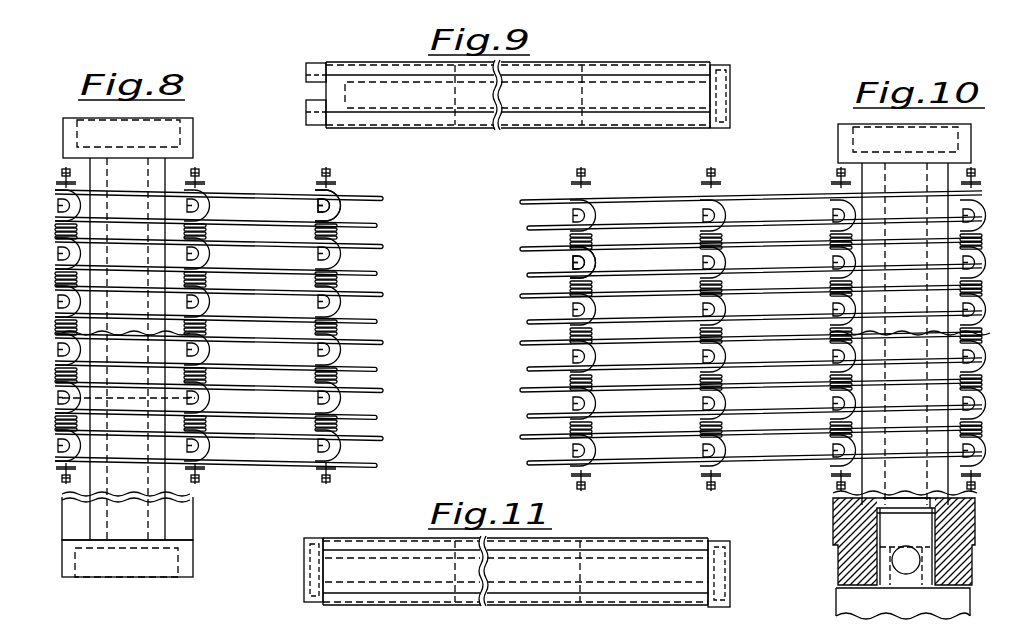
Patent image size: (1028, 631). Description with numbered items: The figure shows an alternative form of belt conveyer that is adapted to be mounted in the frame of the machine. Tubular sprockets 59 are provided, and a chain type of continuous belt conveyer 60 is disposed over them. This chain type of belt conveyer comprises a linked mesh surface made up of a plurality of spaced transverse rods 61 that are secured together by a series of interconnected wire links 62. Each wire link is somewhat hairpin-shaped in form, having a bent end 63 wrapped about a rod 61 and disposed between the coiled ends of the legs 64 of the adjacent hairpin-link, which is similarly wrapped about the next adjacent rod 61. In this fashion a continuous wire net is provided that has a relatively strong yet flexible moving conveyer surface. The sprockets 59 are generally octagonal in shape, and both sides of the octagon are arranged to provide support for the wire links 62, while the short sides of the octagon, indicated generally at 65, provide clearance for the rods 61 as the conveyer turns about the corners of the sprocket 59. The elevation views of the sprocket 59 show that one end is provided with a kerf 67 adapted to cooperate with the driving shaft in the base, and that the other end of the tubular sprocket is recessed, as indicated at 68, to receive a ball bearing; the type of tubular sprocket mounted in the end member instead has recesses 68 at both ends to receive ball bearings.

In FIG. 8, the tubular sprocket 59 is at (63, 148).
In FIG. 9, the tubular sprocket 59 is at (630, 62).
In FIG. 10, the tubular sprocket 59 is at (972, 153).
In FIG. 11, the tubular sprocket 59 is at (631, 545).
In FIG. 8, the chain type of continuous belt conveyer 60 is at (262, 212).
In FIG. 10, the chain type of continuous belt conveyer 60 is at (779, 212).
In FIG. 8, the transverse rod 61 is at (326, 485).
In FIG. 10, the transverse rod 61 is at (583, 171).
In FIG. 8, the wire link 62 is at (238, 275).
In FIG. 10, the wire link 62 is at (533, 196).
In FIG. 8, the bent end 63 is at (341, 218).
In FIG. 10, the bent end 63 is at (596, 263).
In FIG. 8, the leg 64 is at (384, 196).
In FIG. 10, the leg 64 is at (658, 273).
In FIG. 8, the short side of the octagon 65 is at (183, 524).
In FIG. 9, the kerf 67 is at (310, 94).
In FIG. 10, the kerf 67 is at (885, 575).
In FIG. 9, the recess 68 is at (730, 83).
In FIG. 11, the recess 68 is at (312, 553).